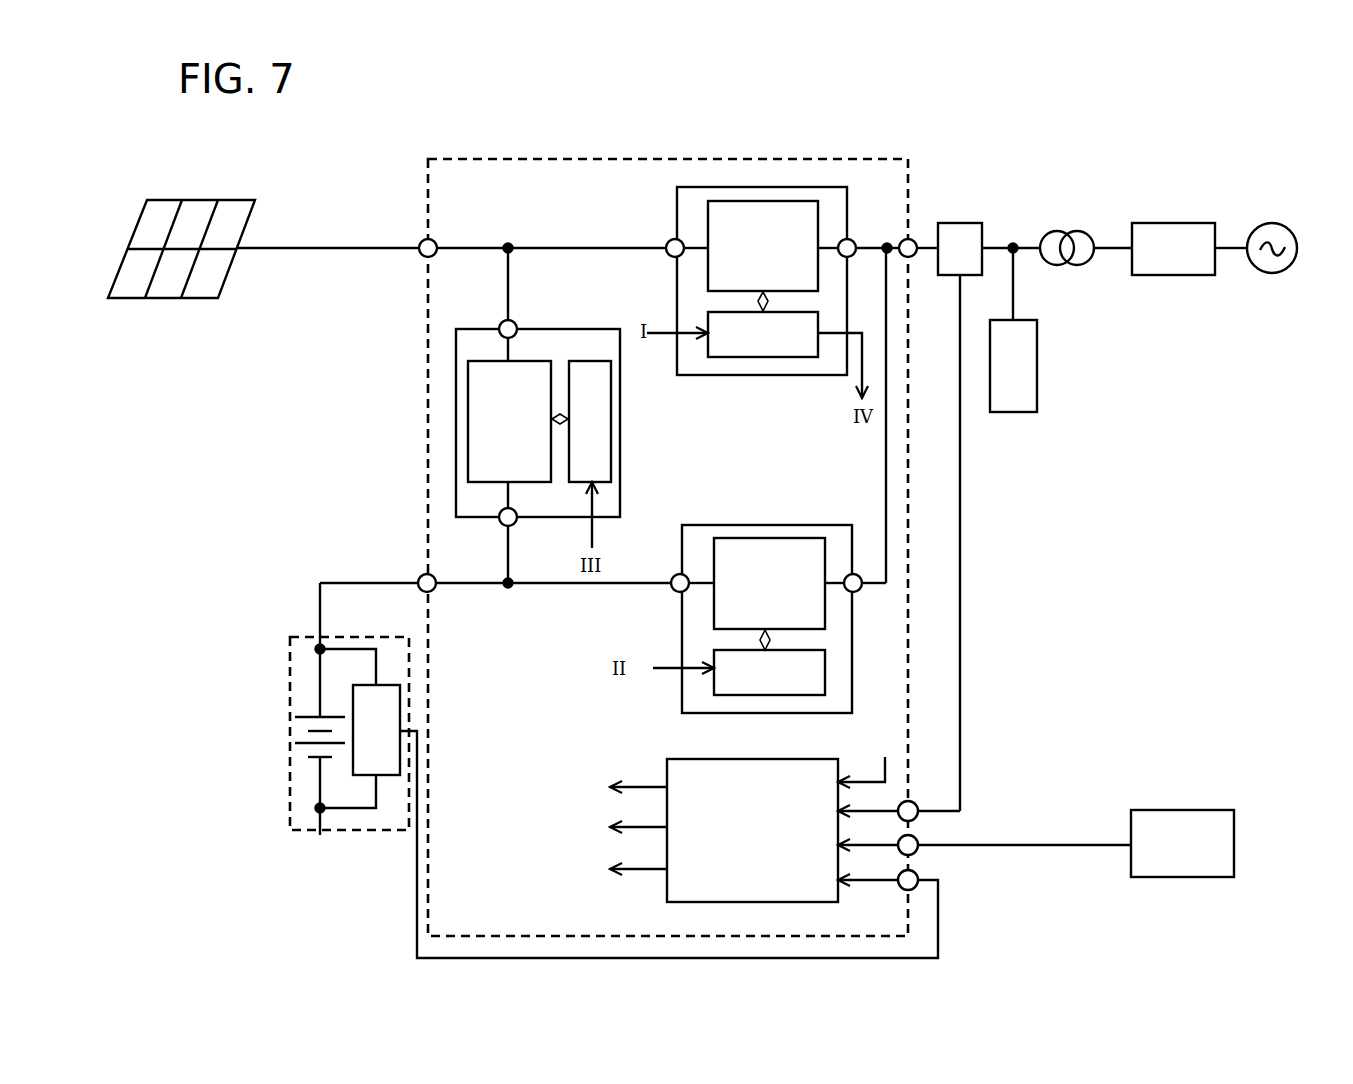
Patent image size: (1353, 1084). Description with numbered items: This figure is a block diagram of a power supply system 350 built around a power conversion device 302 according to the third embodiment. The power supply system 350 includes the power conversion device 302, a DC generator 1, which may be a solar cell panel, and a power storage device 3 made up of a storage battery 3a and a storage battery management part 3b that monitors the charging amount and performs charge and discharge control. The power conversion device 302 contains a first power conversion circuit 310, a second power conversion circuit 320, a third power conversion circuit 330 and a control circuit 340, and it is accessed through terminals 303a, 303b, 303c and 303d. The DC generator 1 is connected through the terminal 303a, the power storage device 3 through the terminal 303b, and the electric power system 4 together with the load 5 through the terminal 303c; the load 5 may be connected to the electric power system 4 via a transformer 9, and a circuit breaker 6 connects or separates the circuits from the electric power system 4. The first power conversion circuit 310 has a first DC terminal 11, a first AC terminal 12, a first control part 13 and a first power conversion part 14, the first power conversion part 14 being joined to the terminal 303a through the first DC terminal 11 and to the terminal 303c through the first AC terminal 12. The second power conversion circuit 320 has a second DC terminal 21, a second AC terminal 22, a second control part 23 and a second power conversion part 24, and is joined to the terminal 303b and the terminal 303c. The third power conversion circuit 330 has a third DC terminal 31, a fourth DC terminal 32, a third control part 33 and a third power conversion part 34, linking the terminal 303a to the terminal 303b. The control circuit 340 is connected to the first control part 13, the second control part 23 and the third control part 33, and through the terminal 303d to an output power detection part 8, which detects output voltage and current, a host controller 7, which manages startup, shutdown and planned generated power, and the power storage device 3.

The DC generator 1 is at (232, 200).
The power storage device 3 is at (290, 650).
The storage battery 3a is at (300, 757).
The storage battery management part 3b is at (390, 685).
The electric power system 4 is at (1270, 223).
The load 5 is at (1037, 362).
The circuit breaker 6 is at (1185, 223).
The host controller 7 is at (1177, 810).
The output power detection part 8 is at (958, 223).
The transformer 9 is at (1058, 231).
The first DC terminal 11 is at (668, 240).
The first AC terminal 12 is at (852, 240).
The first control part 13 is at (723, 358).
The first power conversion part 14 is at (778, 201).
The second DC terminal 21 is at (675, 575).
The second AC terminal 22 is at (858, 592).
The second control part 23 is at (825, 670).
The second power conversion part 24 is at (800, 538).
The third DC terminal 31 is at (503, 320).
The fourth DC terminal 32 is at (503, 525).
The third control part 33 is at (611, 428).
The third power conversion part 34 is at (468, 407).
The power conversion device 302 is at (832, 158).
The terminal 303a is at (425, 238).
The terminal 303b is at (423, 575).
The terminal 303c is at (912, 240).
The terminal 303d is at (917, 873).
The first power conversion circuit 310 is at (712, 187).
The second power conversion circuit 320 is at (742, 525).
The third power conversion circuit 330 is at (570, 329).
The control circuit 340 is at (675, 759).
The power supply system 350 is at (1090, 125).